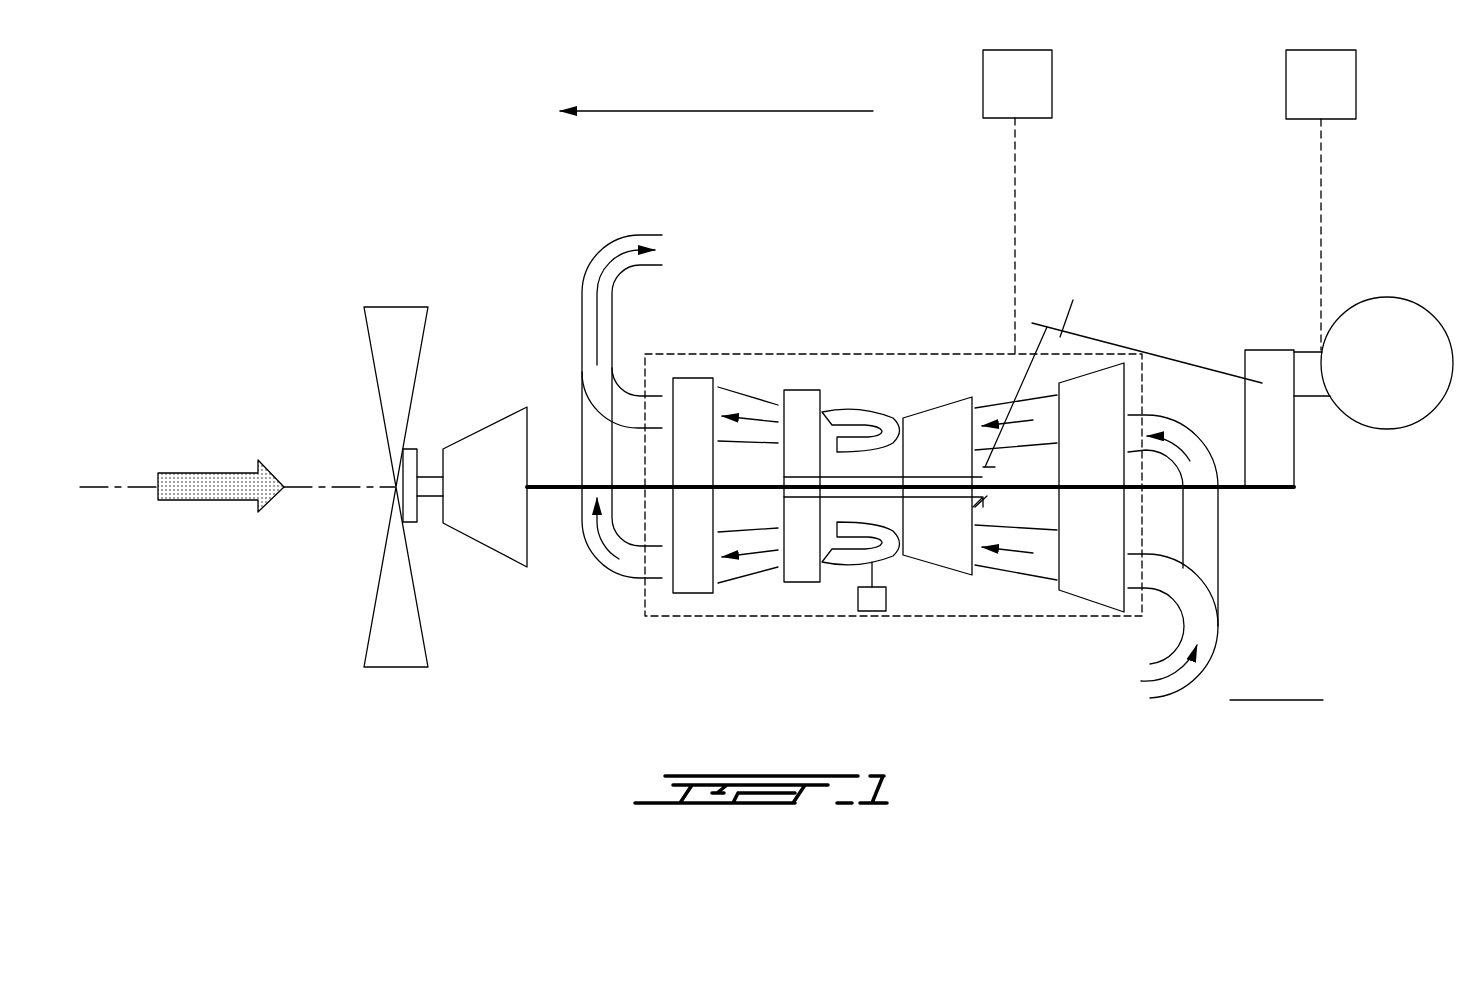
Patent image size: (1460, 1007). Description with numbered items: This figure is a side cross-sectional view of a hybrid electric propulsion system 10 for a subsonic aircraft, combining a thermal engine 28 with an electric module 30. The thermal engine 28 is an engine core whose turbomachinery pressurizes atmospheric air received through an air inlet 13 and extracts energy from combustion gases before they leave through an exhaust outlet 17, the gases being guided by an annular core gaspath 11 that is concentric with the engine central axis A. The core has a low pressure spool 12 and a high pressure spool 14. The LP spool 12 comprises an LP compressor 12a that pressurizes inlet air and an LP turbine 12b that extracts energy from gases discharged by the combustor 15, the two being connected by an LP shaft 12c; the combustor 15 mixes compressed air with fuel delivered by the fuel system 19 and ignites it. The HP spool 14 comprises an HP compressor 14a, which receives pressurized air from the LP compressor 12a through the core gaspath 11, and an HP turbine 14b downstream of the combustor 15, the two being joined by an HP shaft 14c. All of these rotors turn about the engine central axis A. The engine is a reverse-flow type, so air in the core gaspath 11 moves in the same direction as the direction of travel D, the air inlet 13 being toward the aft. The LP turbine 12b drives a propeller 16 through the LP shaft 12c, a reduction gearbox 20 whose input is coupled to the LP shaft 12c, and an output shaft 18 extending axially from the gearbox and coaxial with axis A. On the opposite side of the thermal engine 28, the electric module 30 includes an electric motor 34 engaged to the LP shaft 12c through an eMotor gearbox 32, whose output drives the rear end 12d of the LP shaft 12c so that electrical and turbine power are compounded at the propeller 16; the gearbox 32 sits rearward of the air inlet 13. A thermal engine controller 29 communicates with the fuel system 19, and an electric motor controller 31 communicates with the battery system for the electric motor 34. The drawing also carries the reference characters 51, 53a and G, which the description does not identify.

The hybrid electric propulsion system 10 is at (1059, 167).
The core gaspath 11 is at (1010, 562).
The low pressure spool 12 is at (1122, 224).
The LP compressor 12a is at (1097, 388).
The LP turbine 12b is at (693, 378).
The LP shaft 12c is at (565, 480).
The rear end of the LP shaft 12d is at (1272, 504).
The air inlet 13 is at (1141, 690).
The high pressure spool 14 is at (904, 570).
The HP compressor 14a is at (937, 418).
The HP turbine 14b is at (800, 390).
The HP shaft 14c is at (893, 475).
The combustor 15 is at (858, 412).
The propeller 16 is at (388, 322).
The exhaust outlet 17 is at (638, 248).
The output shaft 18 is at (430, 488).
The fuel system 19 is at (858, 600).
The reduction gearbox 20 is at (478, 430).
The thermal engine 28 is at (753, 354).
The thermal engine controller 29 is at (980, 82).
The electric module 30 is at (1365, 262).
The electric motor controller 31 is at (1356, 84).
The eMotor gearbox 32 is at (1335, 450).
The electric motor 34 is at (1398, 377).
The clutch actuator 51 is at (1025, 377).
The clutch 53a is at (984, 498).
The engine central axis A is at (320, 488).
The direction of travel D is at (737, 111).
The ground G is at (1276, 700).